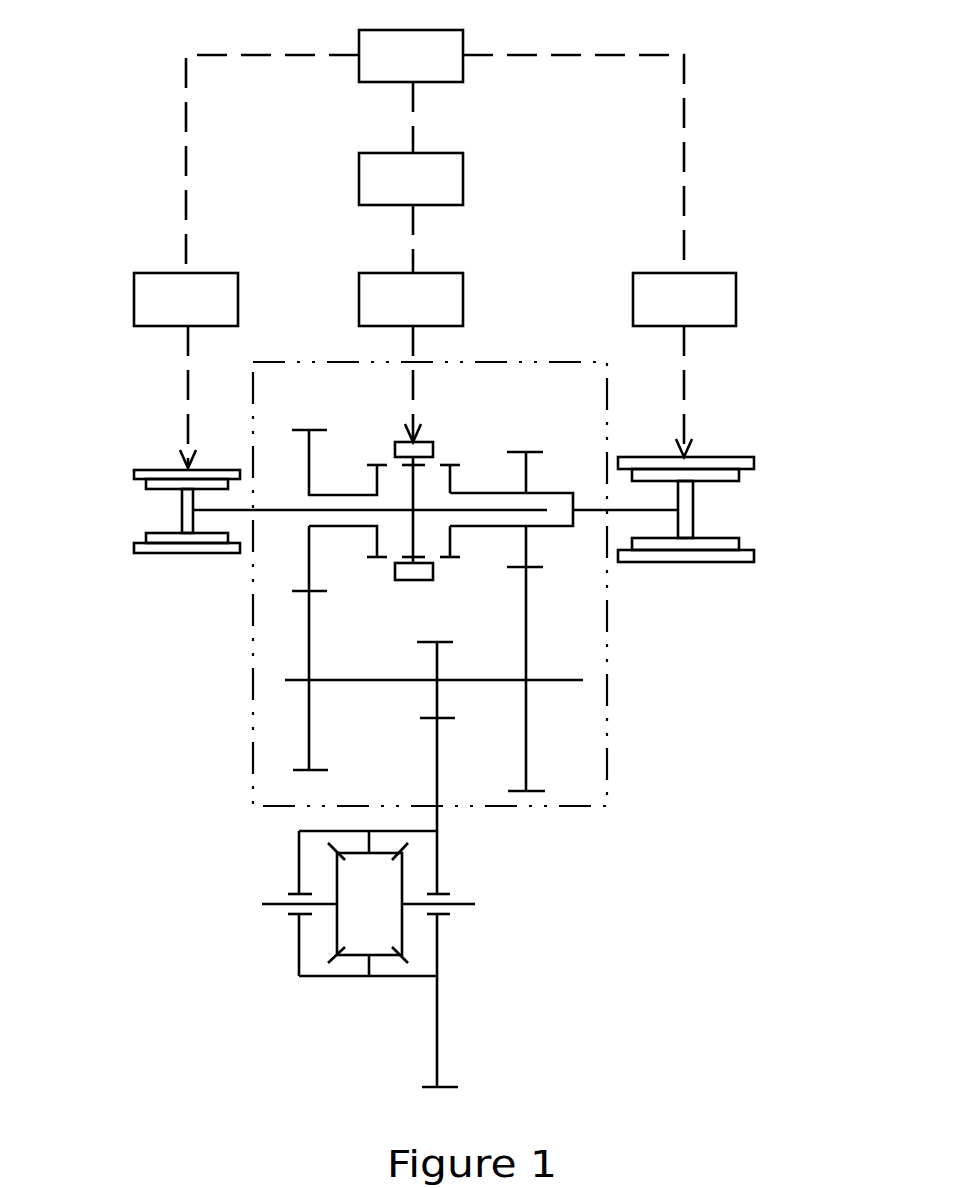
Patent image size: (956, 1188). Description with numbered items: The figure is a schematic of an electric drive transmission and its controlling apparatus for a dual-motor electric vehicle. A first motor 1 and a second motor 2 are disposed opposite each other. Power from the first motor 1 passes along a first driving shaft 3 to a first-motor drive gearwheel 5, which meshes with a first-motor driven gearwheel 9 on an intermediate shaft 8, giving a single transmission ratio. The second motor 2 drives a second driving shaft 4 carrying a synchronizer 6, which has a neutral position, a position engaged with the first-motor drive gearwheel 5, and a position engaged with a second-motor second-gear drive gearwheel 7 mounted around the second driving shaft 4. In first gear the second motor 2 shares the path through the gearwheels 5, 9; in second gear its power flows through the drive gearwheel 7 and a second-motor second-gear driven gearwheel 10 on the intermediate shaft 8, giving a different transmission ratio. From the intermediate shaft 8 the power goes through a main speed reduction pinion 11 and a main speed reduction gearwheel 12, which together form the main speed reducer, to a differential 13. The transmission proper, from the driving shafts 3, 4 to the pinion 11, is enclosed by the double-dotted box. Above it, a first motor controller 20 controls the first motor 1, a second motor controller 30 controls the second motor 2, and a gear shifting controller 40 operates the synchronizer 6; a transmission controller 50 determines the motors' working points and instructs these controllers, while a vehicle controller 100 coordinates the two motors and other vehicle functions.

The first motor 1 is at (733, 457).
The second motor 2 is at (146, 470).
The first driving shaft 3 is at (600, 512).
The second driving shaft 4 is at (286, 512).
The first-motor drive gearwheel 5 is at (518, 452).
The synchronizer 6 is at (384, 432).
The second-motor second-gear drive gearwheel 7 is at (302, 430).
The intermediate shaft 8 is at (563, 683).
The first-motor driven gearwheel 9 is at (528, 613).
The second-motor second-gear driven gearwheel 10 is at (312, 725).
The main speed reduction pinion 11 is at (435, 662).
The main speed reduction gearwheel 12 is at (440, 1028).
The differential 13 is at (297, 862).
The first motor controller 20 is at (684, 299).
The second motor controller 30 is at (186, 299).
The gear shifting controller 40 is at (411, 299).
The transmission controller 50 is at (411, 179).
The vehicle controller 100 is at (411, 56).